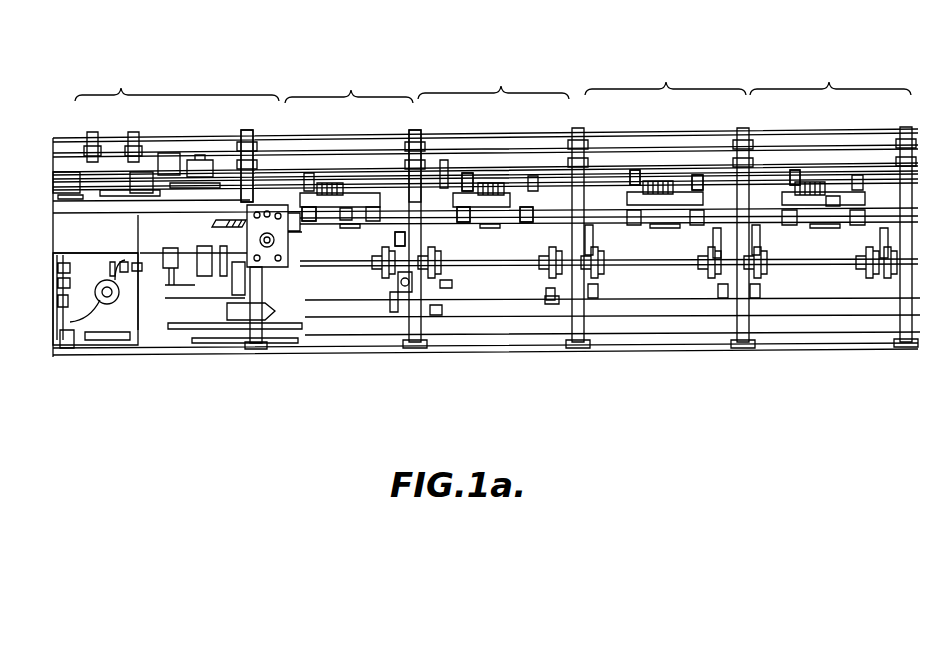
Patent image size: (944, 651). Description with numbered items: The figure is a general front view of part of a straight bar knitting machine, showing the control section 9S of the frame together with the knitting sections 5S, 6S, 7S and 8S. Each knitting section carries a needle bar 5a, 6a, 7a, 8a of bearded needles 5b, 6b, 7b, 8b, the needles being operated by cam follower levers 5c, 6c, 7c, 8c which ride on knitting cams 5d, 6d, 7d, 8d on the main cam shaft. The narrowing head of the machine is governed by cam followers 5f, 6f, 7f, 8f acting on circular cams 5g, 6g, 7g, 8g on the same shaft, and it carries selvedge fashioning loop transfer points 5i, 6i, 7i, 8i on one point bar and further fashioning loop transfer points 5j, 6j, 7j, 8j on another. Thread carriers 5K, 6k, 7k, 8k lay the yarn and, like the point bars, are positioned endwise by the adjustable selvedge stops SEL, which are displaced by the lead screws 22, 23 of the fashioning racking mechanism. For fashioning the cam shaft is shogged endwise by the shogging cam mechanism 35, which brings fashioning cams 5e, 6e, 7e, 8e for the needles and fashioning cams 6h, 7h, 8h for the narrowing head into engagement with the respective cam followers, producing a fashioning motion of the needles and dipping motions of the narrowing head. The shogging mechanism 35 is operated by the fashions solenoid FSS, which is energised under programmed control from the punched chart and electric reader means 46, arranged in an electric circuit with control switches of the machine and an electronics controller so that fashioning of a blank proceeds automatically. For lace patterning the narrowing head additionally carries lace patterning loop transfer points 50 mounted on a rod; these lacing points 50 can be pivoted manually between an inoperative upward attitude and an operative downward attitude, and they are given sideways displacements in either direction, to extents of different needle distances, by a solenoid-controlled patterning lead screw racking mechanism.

The control section 9S is at (104, 131).
The knitting section 5S is at (357, 143).
The knitting section 6S is at (499, 143).
The knitting section 7S is at (668, 139).
The knitting section 8S is at (829, 140).
The lead screw 22 is at (58, 185).
The lead screw 23 is at (142, 168).
The selvedge stops SEL is at (172, 163).
The cam follower 5f is at (238, 196).
The bearded needles 5b is at (296, 204).
The selvedge fashioning loop transfer points 5i is at (316, 192).
The needle bar 5a is at (322, 193).
The thread carrier 5K is at (350, 230).
The cam follower 6f is at (408, 200).
The bearded needles 6b is at (467, 192).
The selvedge fashioning loop transfer points 6i is at (472, 193).
The needle bar 6a is at (480, 193).
The lace patterning loop transfer points 50 is at (493, 227).
The bearded needles 7b is at (630, 193).
The selvedge fashioning loop transfer points 7i is at (650, 197).
The needle bar 7a is at (657, 193).
The thread carrier 7k is at (673, 197).
The fashioning loop transfer points 7j is at (703, 197).
The bearded needles 8b is at (785, 197).
The selvedge fashioning loop transfer points 8i is at (808, 197).
The needle bar 8a is at (817, 193).
The thread carrier 8k is at (817, 230).
The punched chart and electric reader means 46 is at (98, 266).
The fashions solenoid FSS is at (163, 264).
The cam shaft shogging mechanism 35 is at (233, 253).
The fashioning loop transfer points 5j is at (358, 212).
The cam follower lever 5c is at (400, 240).
The circular cam 5g is at (297, 282).
The fashioning cam 5e is at (380, 292).
The knitting cam 5d is at (395, 292).
The fashioning cam 6h is at (437, 313).
The circular cam 6g is at (437, 287).
The thread carrier 6k is at (493, 223).
The fashioning loop transfer points 6j is at (528, 217).
The cam follower lever 6c is at (537, 258).
The fashioning cam 6e is at (550, 300).
The knitting cam 6d is at (555, 300).
The fashioning cam 7h is at (592, 290).
The cam follower 7f is at (590, 228).
The cam follower lever 7c is at (713, 239).
The circular cam 7g is at (603, 277).
The fashioning cam 7e is at (707, 279).
The knitting cam 7d is at (720, 293).
The fashioning cam 8h is at (753, 293).
The cam follower 8f is at (757, 228).
The circular cam 8g is at (780, 277).
The fashioning loop transfer points 8j is at (833, 202).
The cam follower lever 8c is at (880, 235).
The fashioning cam 8e is at (882, 293).
The knitting cam 8d is at (890, 280).